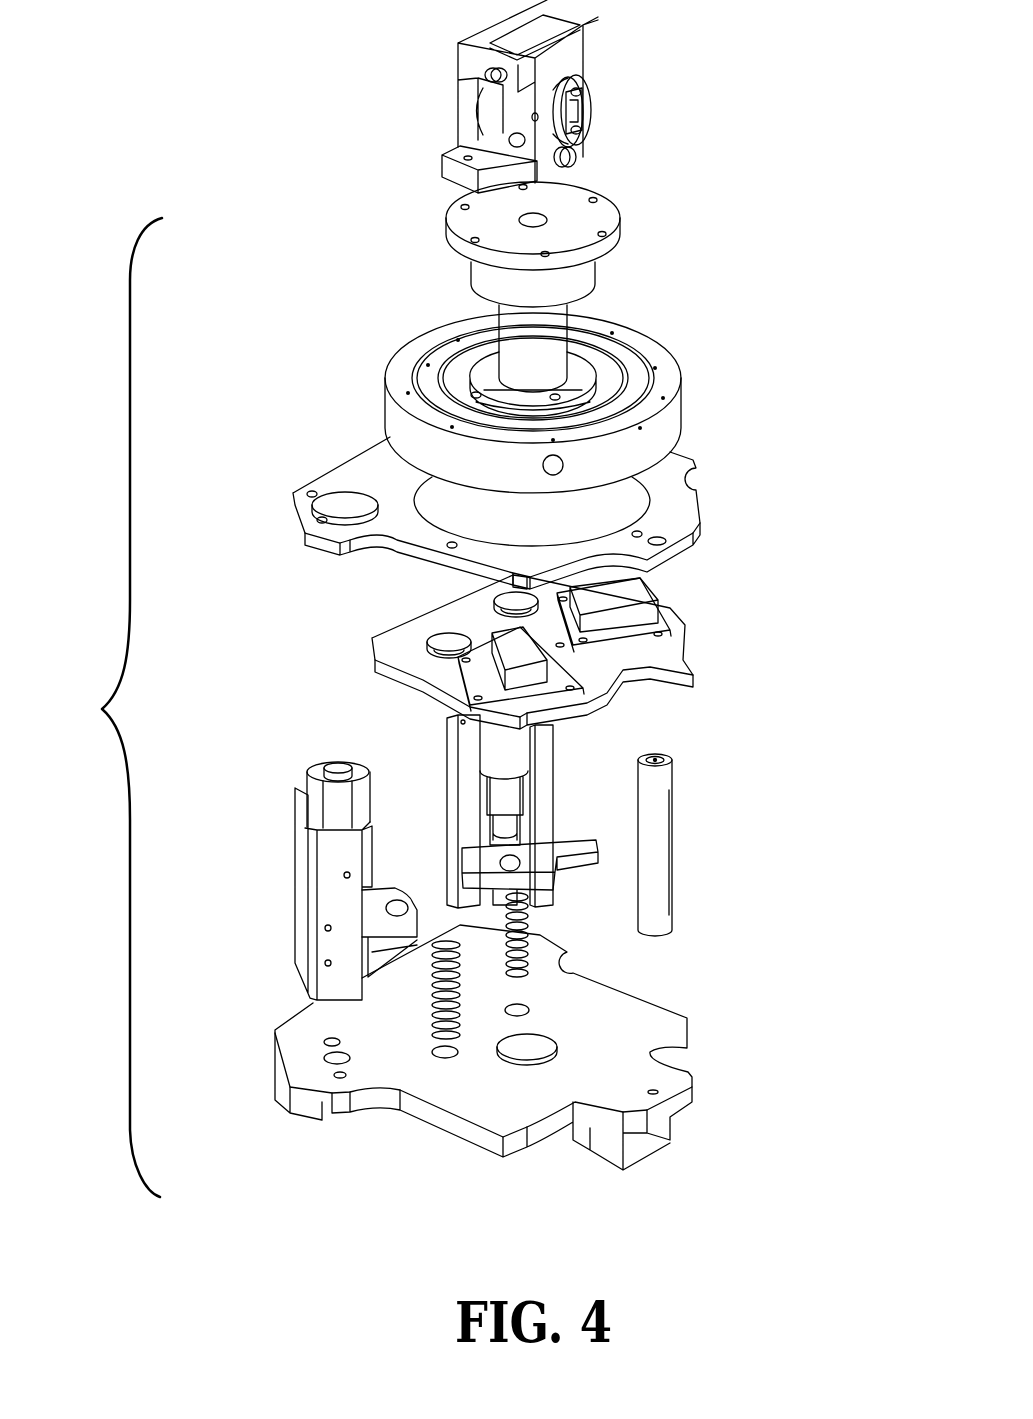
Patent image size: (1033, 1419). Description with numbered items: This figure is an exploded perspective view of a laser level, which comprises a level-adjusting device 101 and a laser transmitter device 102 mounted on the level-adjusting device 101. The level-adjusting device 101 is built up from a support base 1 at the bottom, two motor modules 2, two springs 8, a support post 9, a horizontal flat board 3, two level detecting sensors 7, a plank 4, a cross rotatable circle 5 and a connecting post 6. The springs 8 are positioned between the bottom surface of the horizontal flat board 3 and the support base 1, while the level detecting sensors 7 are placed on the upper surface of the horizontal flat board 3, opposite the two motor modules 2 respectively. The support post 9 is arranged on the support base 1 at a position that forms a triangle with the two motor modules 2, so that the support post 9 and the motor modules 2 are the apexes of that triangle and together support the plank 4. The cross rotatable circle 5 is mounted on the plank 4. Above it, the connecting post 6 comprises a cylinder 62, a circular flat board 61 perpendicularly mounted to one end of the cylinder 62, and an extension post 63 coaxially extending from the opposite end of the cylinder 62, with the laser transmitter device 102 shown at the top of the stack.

The level-adjusting device 101 is at (98, 707).
The laser transmitter device 102 is at (570, 48).
The support base 1 is at (477, 1087).
The motor modules 2 is at (295, 800).
The horizontal flat board 3 is at (398, 637).
The plank 4 is at (363, 474).
The cross rotatable circle 5 is at (652, 435).
The connecting post 6 is at (555, 274).
The circular flat board 61 is at (480, 213).
The cylinder 62 is at (520, 290).
The extension post 63 is at (550, 347).
The level detecting sensors 7 is at (623, 613).
The springs 8 is at (462, 1000).
The support post 9 is at (653, 827).